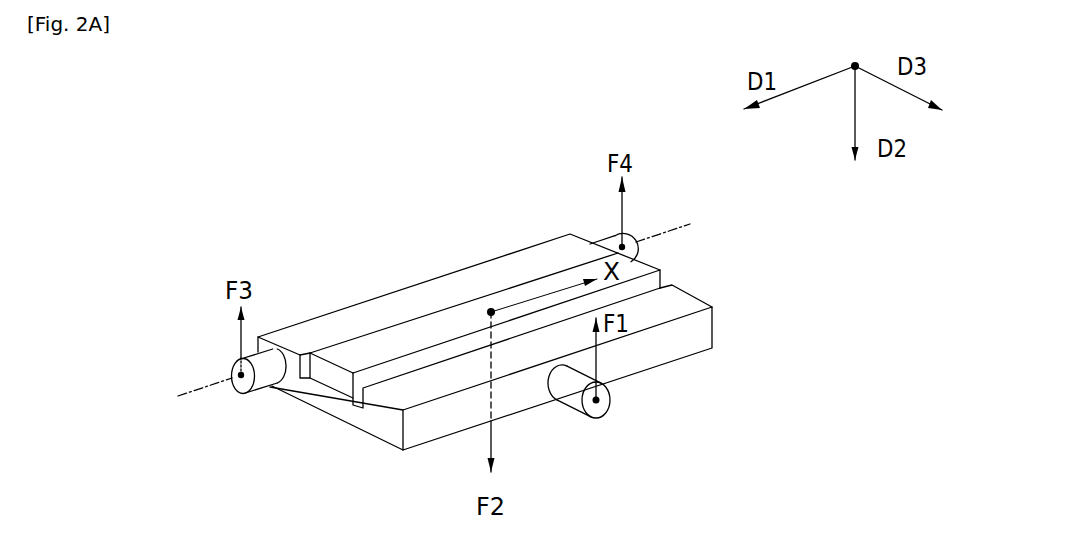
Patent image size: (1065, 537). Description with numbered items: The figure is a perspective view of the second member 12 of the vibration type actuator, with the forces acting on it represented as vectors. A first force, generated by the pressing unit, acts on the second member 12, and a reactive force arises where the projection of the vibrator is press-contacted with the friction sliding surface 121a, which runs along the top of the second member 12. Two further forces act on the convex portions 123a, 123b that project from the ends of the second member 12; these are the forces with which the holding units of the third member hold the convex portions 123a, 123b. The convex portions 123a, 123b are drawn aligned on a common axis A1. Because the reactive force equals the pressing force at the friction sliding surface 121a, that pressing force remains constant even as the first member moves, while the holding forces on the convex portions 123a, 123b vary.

The second member 12 is at (249, 151).
The friction sliding surface 121a is at (415, 328).
The convex portion 123a is at (263, 393).
The convex portion 123b is at (629, 240).
The rotation axis A1 is at (416, 324).